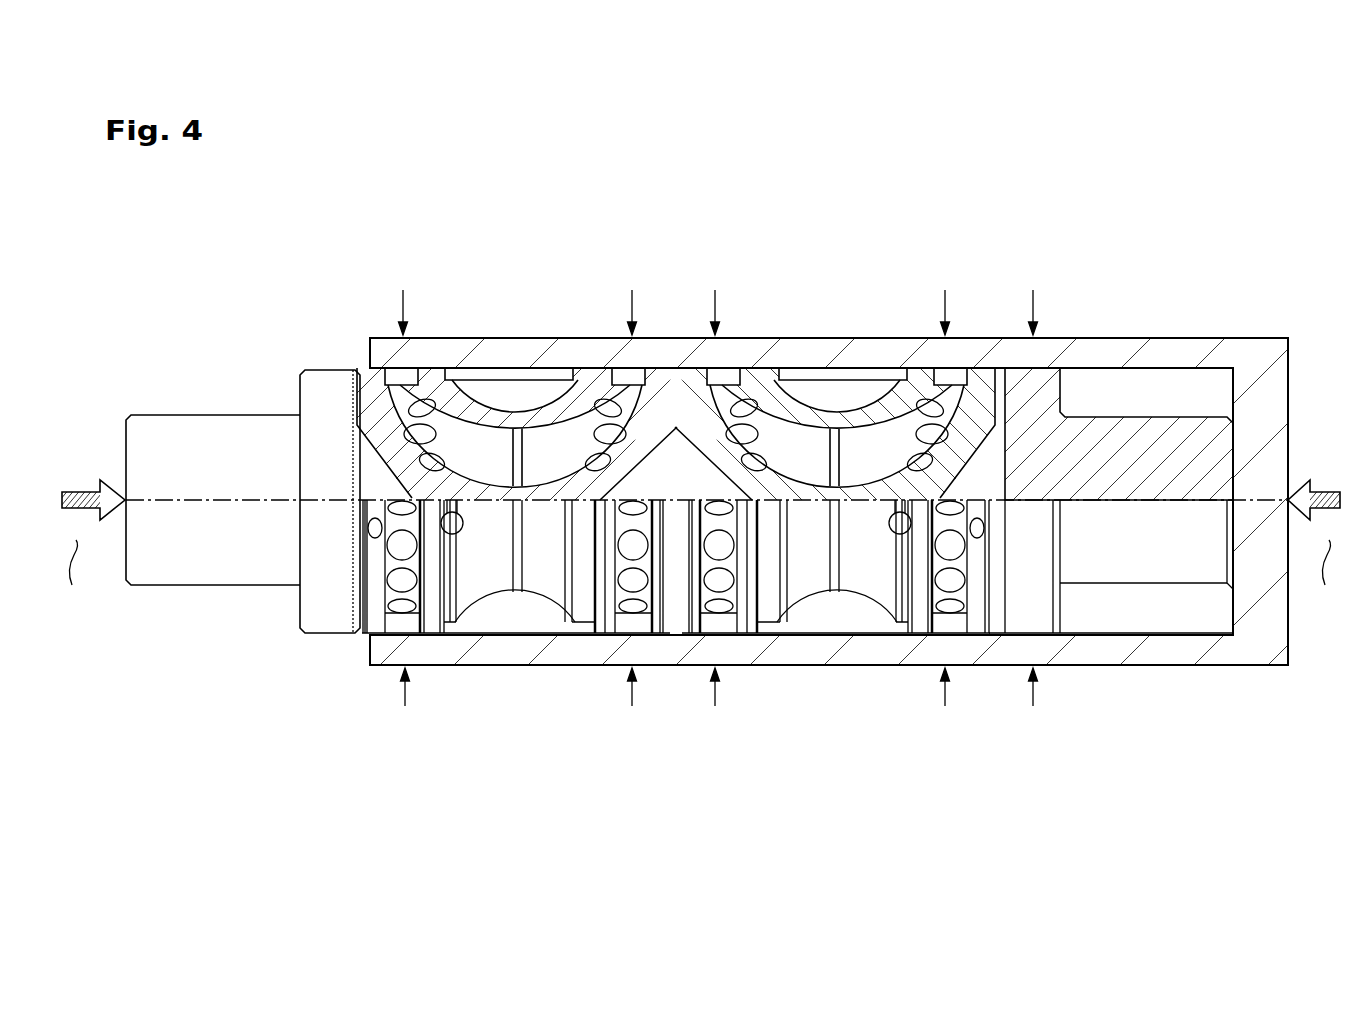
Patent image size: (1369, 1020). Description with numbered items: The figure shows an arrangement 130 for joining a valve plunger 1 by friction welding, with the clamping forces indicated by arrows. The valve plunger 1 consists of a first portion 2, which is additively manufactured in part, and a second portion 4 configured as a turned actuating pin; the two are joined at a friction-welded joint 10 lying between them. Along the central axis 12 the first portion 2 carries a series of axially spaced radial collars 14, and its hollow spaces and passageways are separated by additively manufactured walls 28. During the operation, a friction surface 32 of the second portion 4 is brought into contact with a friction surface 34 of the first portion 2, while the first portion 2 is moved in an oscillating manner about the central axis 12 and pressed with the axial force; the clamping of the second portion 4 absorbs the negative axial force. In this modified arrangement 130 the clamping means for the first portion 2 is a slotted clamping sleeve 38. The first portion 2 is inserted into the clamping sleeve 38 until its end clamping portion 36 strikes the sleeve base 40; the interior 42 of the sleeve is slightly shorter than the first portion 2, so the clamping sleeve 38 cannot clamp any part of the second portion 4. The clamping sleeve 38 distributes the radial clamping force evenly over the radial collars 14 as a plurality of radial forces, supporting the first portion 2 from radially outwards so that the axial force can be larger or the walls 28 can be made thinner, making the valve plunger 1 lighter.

The arrangement 130 is at (1190, 232).
The valve plunger 1 is at (1129, 392).
The first portion 2 is at (854, 384).
The second portion 4 is at (232, 388).
The friction-welded joint 10 is at (352, 354).
The central axis 12 is at (260, 502).
The radial collars 14 is at (434, 348).
The walls 28 is at (537, 492).
The friction surface 32 is at (357, 560).
The friction surface 34 is at (350, 572).
The clamping portion 36 is at (1240, 532).
The clamping sleeve 38 is at (1157, 655).
The sleeve base 40 is at (1228, 628).
The interior 42 is at (1186, 630).